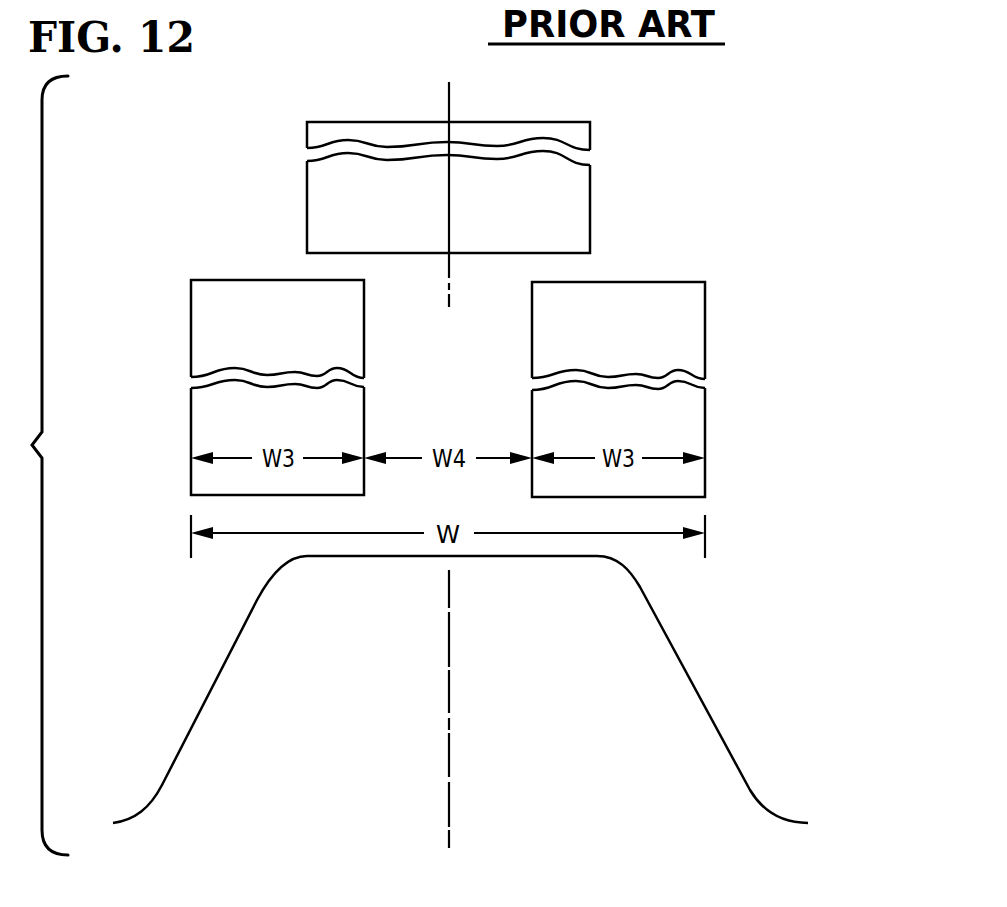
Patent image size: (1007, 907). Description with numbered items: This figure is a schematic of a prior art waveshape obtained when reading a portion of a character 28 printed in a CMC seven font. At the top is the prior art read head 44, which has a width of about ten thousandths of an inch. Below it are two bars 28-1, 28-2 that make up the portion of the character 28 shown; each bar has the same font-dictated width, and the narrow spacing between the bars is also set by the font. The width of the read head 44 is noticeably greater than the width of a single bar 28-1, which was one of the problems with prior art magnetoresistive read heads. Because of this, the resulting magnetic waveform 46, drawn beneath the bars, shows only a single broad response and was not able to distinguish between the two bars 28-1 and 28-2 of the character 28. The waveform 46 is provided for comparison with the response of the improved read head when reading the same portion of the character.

The prior art read head 44 is at (600, 190).
The character 28 is at (482, 388).
The bar 28-1 is at (695, 427).
The bar 28-2 is at (352, 420).
The magnetic waveform 46 is at (655, 655).